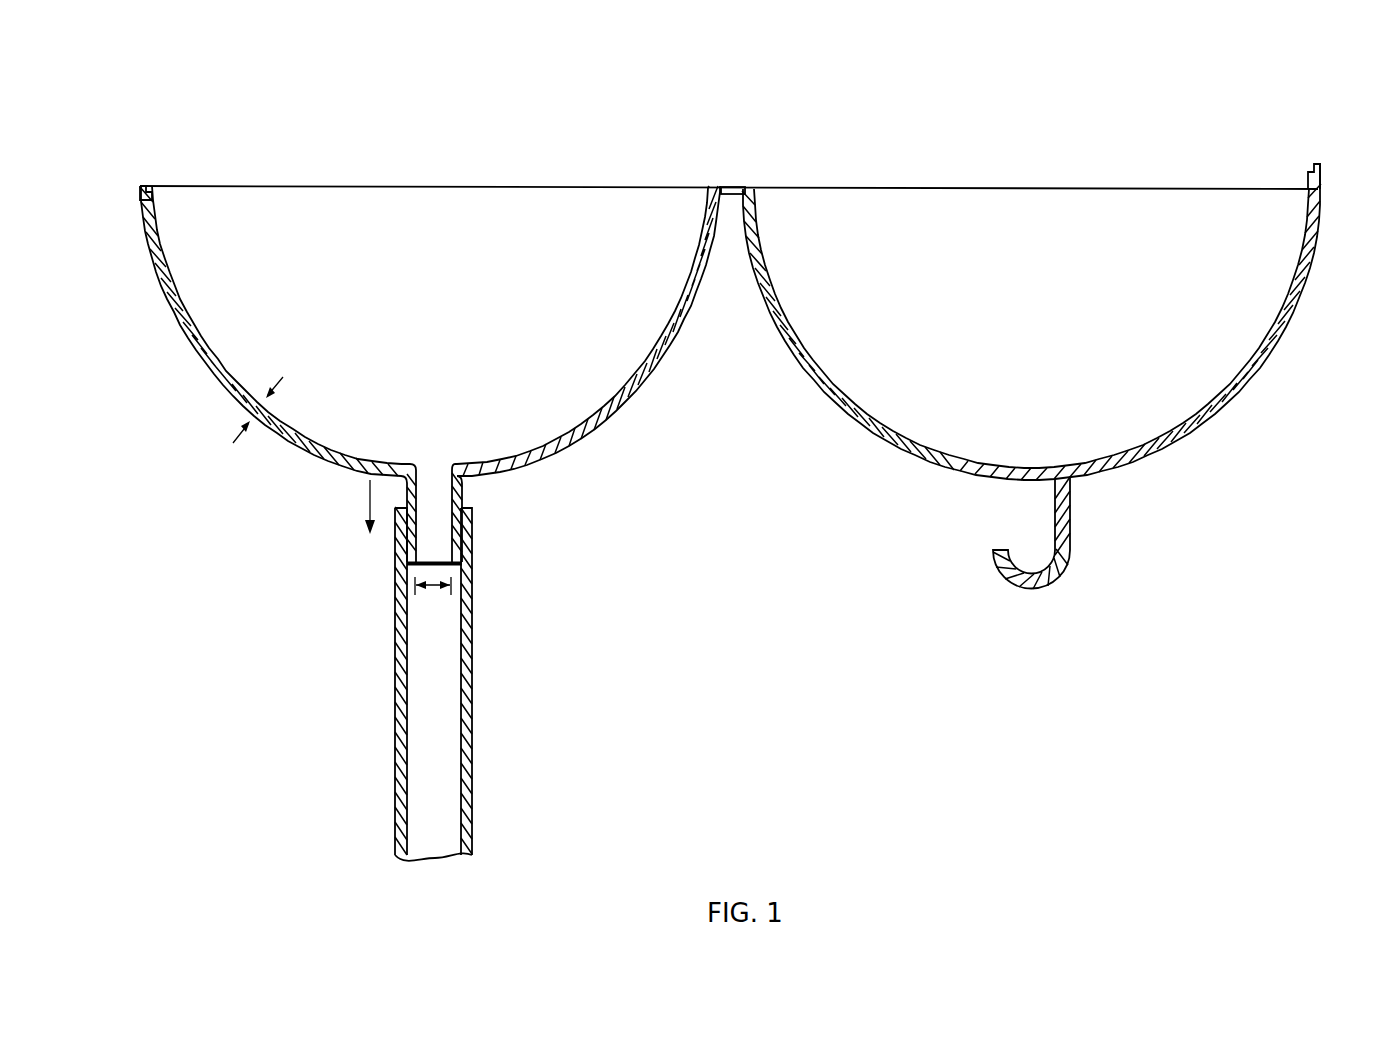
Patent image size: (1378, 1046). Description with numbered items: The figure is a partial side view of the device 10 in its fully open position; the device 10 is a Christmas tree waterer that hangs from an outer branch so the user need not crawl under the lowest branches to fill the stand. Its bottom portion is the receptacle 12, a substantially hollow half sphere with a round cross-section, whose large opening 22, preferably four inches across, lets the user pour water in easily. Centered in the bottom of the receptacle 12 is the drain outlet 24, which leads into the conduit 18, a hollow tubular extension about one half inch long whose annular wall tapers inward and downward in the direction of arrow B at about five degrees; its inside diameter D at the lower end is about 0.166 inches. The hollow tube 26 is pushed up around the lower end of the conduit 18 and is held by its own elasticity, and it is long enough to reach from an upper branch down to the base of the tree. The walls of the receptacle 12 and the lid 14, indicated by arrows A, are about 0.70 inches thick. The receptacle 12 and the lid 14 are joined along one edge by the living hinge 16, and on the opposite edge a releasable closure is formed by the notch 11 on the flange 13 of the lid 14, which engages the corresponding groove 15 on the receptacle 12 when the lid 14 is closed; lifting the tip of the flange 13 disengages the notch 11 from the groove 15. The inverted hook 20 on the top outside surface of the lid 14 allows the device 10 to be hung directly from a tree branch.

The device 10 is at (1291, 95).
The notch 11 is at (1306, 177).
The receptacle 12 is at (150, 290).
The flange 13 is at (1322, 170).
The lid 14 is at (1300, 303).
The groove 15 is at (140, 195).
The living hinge 16 is at (736, 193).
The conduit 18 is at (463, 487).
The inverted hook 20 is at (1070, 560).
The opening 22 is at (382, 205).
The drain outlet 24 is at (430, 522).
The hollow tube 26 is at (472, 685).
The arrows indicating wall thickness A is at (249, 421).
The arrow indicating taper direction B is at (357, 507).
The inside diameter D is at (433, 599).